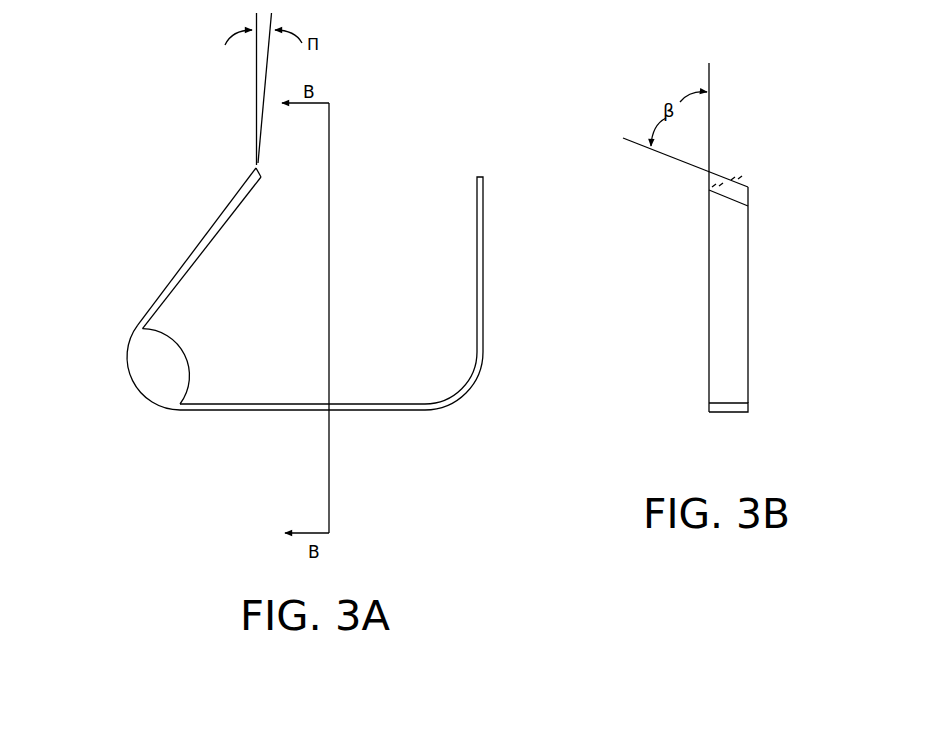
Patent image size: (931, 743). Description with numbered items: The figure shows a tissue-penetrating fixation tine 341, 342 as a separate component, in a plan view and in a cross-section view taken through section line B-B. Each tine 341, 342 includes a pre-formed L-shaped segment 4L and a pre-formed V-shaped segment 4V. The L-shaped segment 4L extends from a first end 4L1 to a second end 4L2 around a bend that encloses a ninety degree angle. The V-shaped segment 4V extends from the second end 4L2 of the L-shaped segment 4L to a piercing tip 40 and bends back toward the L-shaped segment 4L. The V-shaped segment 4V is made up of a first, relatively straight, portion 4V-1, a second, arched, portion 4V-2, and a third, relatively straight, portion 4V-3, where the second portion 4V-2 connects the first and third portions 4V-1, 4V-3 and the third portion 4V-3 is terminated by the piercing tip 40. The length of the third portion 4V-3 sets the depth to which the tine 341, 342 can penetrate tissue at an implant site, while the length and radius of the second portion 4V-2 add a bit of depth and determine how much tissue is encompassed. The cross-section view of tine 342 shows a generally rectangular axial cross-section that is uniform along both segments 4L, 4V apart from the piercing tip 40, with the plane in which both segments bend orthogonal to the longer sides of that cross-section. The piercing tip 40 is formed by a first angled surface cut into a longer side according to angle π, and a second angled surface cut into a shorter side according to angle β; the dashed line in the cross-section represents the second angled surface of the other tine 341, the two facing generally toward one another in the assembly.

In FIG. 3A, the tissue-penetrating fixation tine 341 is at (397, 63).
In FIG. 3B, the tissue-penetrating fixation tine 342 is at (800, 277).
In FIG. 3A, the piercing tip 40 is at (261, 177).
In FIG. 3B, the piercing tip 40 is at (740, 193).
In FIG. 3A, the V-shaped segment 4V is at (133, 240).
In FIG. 3B, the V-shaped segment 4V is at (690, 298).
In FIG. 3A, the first portion 4V-1 is at (310, 386).
In FIG. 3A, the second portion 4V-2 is at (178, 453).
In FIG. 3A, the third portion 4V-3 is at (274, 190).
In FIG. 3A, the L-shaped segment 4L is at (490, 408).
In FIG. 3A, the first end 4L1 is at (482, 185).
In FIG. 3A, the second end 4L2 is at (323, 402).
In FIG. 3B, the second end 4L2 is at (723, 400).